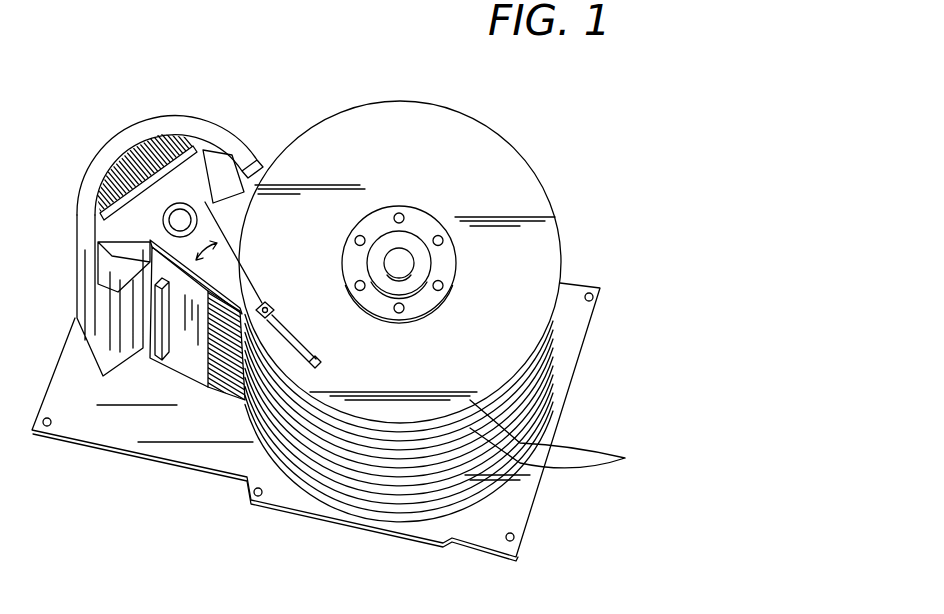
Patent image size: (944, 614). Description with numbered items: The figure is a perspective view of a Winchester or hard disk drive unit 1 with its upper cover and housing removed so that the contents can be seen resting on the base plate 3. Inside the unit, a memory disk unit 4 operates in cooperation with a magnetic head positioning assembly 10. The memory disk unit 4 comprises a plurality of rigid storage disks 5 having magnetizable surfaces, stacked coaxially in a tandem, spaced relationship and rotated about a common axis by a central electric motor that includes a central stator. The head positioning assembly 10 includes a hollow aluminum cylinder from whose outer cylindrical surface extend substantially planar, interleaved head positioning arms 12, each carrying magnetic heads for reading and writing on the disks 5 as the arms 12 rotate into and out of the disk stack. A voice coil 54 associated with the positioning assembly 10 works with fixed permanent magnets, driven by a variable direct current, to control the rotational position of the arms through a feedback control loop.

The disk drive unit 1 is at (550, 165).
The base plate 3 is at (140, 425).
The memory disk unit 4 is at (397, 260).
The rigid storage disks 5 is at (558, 438).
The magnetic head positioning assembly 10 is at (184, 220).
The head positioning arms 12 is at (238, 286).
The voice coil 54 is at (132, 178).